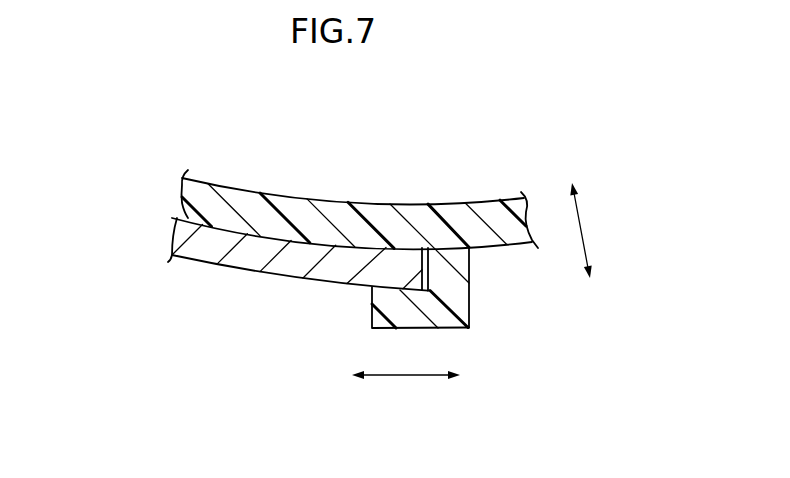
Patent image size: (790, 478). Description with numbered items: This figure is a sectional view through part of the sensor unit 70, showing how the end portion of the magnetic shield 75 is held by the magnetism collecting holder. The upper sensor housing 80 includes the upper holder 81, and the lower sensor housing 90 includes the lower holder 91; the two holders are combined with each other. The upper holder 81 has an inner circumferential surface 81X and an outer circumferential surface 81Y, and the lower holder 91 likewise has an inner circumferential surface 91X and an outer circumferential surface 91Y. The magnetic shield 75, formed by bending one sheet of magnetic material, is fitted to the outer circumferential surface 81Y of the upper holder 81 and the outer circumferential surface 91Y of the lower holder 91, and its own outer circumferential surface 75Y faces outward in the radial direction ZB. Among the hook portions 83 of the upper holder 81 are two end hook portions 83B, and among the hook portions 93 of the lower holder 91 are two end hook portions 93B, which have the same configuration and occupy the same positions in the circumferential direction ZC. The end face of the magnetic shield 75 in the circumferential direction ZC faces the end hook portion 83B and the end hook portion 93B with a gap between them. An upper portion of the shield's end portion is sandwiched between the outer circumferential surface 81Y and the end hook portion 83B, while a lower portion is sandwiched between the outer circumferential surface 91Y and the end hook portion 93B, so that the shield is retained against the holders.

The sensor unit 70 is at (141, 154).
The magnetic shield 75 is at (196, 254).
The outer circumferential surface of the magnetic shield 75Y is at (225, 268).
The upper sensor housing 80 is at (510, 175).
The lower sensor housing 90 is at (405, 253).
The upper holder 81 is at (419, 218).
The lower holder 91 is at (355, 247).
The inner circumferential surface of the upper holder 81X is at (288, 197).
The inner circumferential surface of the lower holder 91X is at (353, 171).
The outer circumferential surface of the upper holder 81Y is at (318, 248).
The outer circumferential surface of the lower holder 91Y is at (352, 287).
The hook portions 83 is at (502, 340).
The hook portions 93 is at (505, 310).
The end hook portion 83B is at (461, 299).
The end hook portion 93B is at (549, 287).
The radial direction ZB is at (596, 230).
The circumferential direction ZC is at (406, 362).